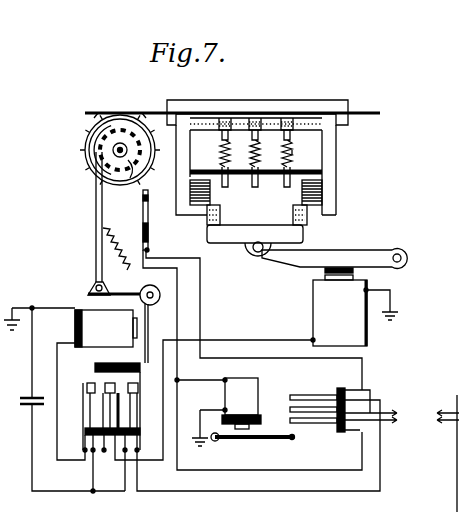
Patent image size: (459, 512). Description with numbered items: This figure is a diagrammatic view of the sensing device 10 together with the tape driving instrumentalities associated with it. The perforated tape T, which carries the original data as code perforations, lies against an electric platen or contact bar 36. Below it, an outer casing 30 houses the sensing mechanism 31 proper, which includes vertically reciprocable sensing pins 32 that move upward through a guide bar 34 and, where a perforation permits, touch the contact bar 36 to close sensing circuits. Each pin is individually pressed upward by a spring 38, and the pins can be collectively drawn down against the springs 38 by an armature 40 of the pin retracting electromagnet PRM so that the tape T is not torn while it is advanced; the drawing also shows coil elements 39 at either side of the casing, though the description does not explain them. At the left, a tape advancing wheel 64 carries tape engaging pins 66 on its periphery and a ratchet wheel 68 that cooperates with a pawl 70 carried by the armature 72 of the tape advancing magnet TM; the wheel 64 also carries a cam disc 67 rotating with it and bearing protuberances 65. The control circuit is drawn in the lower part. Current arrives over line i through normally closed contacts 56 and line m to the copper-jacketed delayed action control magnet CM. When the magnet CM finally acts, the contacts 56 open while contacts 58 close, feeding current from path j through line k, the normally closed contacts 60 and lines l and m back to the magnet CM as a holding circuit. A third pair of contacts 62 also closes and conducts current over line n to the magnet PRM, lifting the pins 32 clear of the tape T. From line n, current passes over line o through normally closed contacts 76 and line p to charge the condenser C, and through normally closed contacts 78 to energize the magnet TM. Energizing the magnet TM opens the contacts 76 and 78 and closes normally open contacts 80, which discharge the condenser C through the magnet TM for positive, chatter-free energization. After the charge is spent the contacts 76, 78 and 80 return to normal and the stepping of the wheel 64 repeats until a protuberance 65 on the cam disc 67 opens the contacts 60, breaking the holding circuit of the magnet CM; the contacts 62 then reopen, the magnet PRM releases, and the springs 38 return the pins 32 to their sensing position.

The perforated tape T is at (378, 113).
The contact bar 36 is at (344, 100).
The sensing device 10 is at (341, 189).
The outer casing 30 is at (333, 205).
The sensing mechanism 31 is at (324, 154).
The sensing pins 32 is at (256, 118).
The guide bar 34 is at (287, 108).
The springs 38 is at (292, 152).
The coils 39 is at (323, 215).
The armature 40 is at (356, 253).
The tape advancing wheel 64 is at (121, 120).
The tape engaging pins 66 is at (147, 118).
The protuberances 65 is at (112, 128).
The cam disc 67 is at (104, 146).
The ratchet wheel 68 is at (126, 178).
The pawl 70 is at (97, 216).
The armature 72 is at (140, 293).
The normally closed contacts 60 is at (149, 213).
The normally open contacts 80 is at (89, 383).
The normally closed contacts 78 is at (108, 394).
The normally closed contacts 76 is at (134, 394).
The normally open contacts 62 is at (332, 396).
The contacts 58 is at (308, 410).
The normally closed contacts 56 is at (306, 427).
The condenser C is at (17, 406).
The tape advancing magnet TM is at (70, 326).
The pin retracting electromagnet PRM is at (354, 307).
The delayed action control magnet CM is at (241, 403).
The line k is at (201, 305).
The line l is at (178, 310).
The line m is at (225, 419).
The line n is at (398, 378).
The line o is at (138, 462).
The line p is at (124, 462).
The line i is at (415, 436).
The path j is at (423, 453).